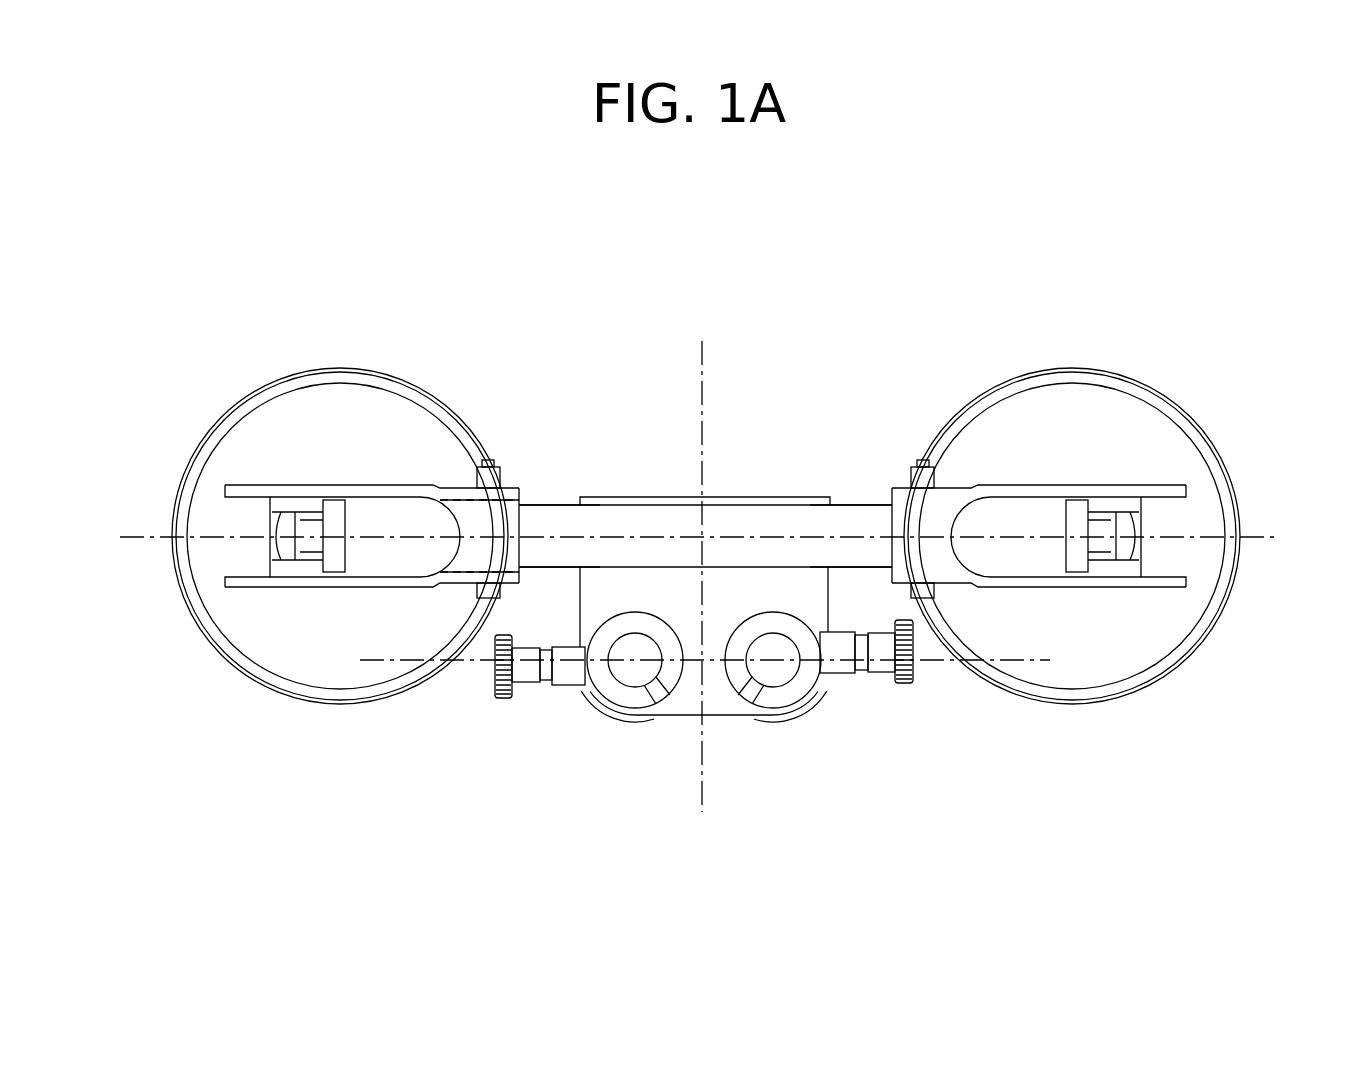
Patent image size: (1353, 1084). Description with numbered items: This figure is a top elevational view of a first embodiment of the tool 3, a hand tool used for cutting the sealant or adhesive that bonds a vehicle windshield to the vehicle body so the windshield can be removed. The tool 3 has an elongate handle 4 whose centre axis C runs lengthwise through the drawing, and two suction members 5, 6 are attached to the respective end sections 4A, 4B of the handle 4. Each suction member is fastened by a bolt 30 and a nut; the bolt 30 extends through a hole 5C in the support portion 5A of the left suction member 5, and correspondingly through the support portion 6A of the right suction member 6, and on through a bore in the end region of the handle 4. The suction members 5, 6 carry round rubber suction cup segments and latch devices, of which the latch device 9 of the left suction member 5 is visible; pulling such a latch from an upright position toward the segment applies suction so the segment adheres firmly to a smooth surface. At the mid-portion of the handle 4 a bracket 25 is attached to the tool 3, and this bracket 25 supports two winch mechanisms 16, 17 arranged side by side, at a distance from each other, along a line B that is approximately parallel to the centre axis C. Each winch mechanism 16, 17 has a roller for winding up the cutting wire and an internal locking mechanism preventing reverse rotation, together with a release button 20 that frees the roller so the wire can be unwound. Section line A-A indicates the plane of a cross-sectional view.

The tool 3 is at (832, 372).
The handle 4 is at (762, 530).
The end section of the handle 4A is at (538, 528).
The end section of the handle 4B is at (862, 522).
The suction member 5 is at (230, 357).
The support portion 5A is at (503, 560).
The hole 5C is at (500, 578).
The suction member 6 is at (1132, 335).
The support portion 6A is at (925, 547).
The latch device 9 is at (332, 529).
The winch mechanism 16 is at (603, 749).
The winch mechanism 17 is at (818, 738).
The release button 20 is at (908, 660).
The bracket 25 is at (712, 684).
The bolt 30 is at (489, 460).
The section line A- A is at (700, 341).
The line B is at (1055, 657).
The centre axis C is at (1263, 537).